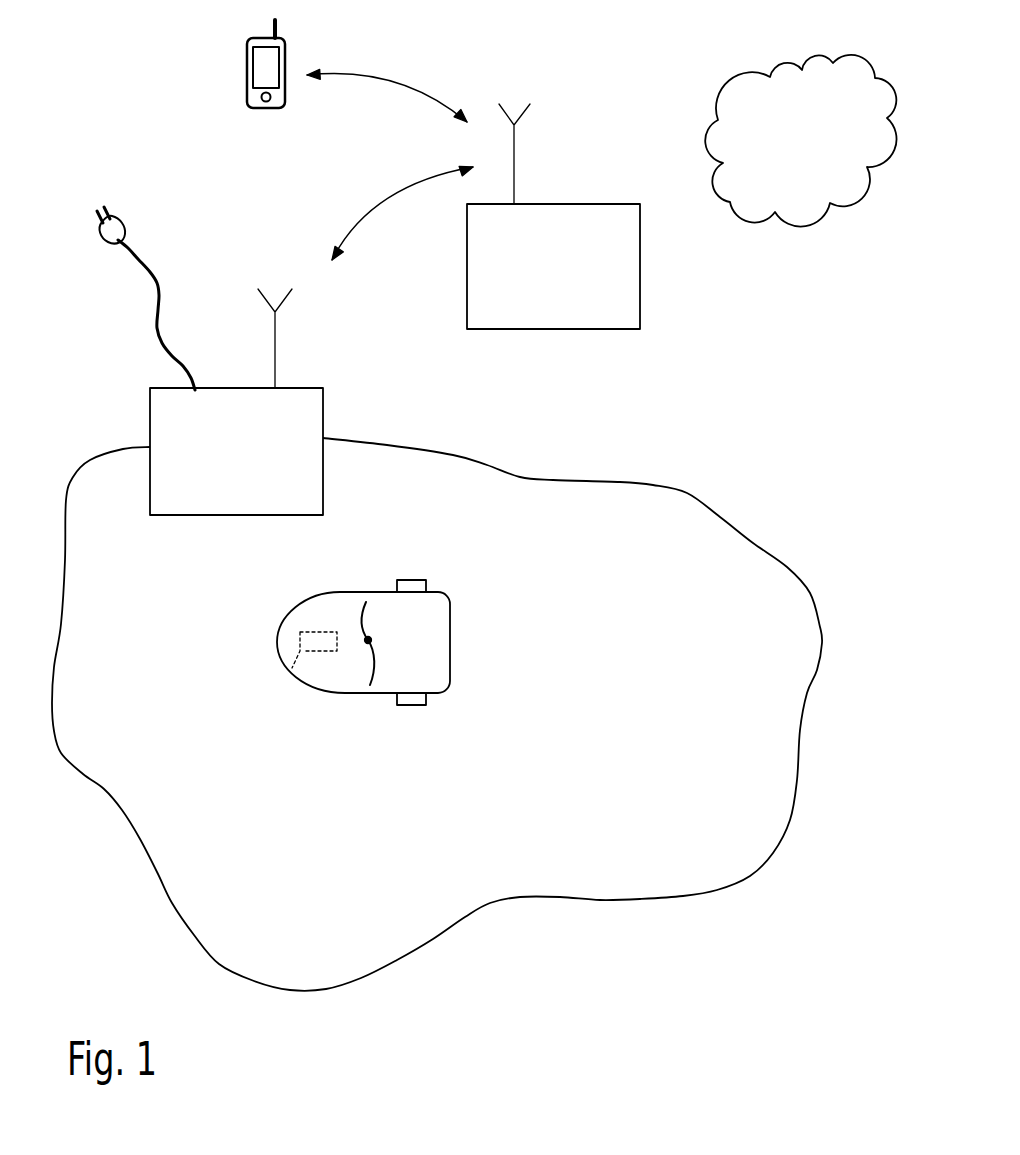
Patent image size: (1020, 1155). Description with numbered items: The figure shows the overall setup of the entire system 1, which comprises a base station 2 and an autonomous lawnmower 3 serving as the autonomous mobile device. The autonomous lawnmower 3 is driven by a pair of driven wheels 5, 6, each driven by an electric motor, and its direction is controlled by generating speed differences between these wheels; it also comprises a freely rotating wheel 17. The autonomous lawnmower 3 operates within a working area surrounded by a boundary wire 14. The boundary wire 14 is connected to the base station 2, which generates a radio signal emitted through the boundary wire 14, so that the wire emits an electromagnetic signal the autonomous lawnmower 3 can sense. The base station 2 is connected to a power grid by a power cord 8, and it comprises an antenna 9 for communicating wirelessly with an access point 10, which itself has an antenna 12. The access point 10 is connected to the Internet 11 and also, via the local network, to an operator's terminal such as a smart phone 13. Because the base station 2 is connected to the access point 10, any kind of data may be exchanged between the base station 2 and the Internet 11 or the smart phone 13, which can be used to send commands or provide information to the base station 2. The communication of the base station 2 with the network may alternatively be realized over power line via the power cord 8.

The system 1 is at (538, 948).
The base station 2 is at (207, 500).
The autonomous lawnmower 3 is at (437, 640).
The driven wheel 5 is at (409, 580).
The driven wheel 6 is at (410, 705).
The power cord 8 is at (158, 283).
The antenna 9 is at (277, 348).
The access point 10 is at (628, 268).
The Internet 11 is at (811, 150).
The antenna 12 is at (522, 146).
The smart phone 13 is at (246, 75).
The boundary wire 14 is at (170, 897).
The freely rotating wheel 17 is at (295, 672).